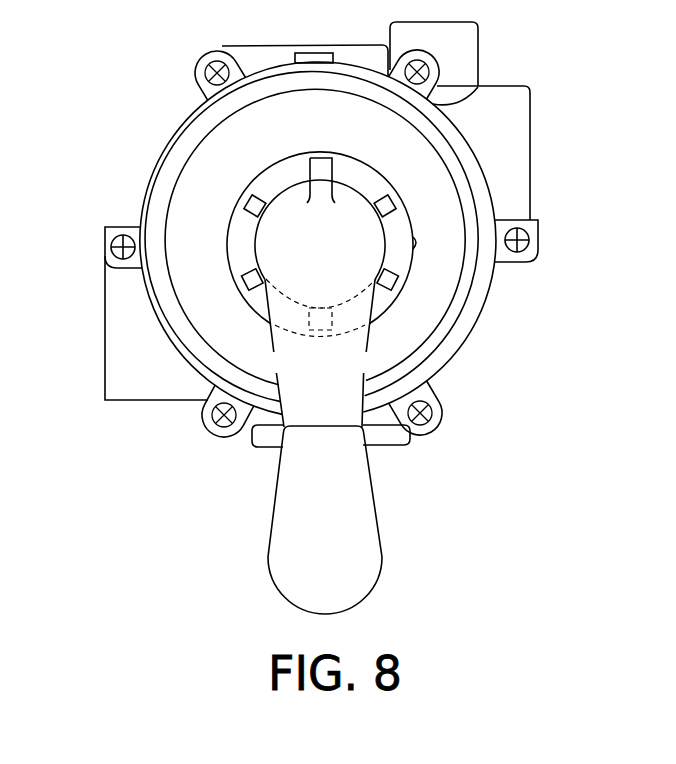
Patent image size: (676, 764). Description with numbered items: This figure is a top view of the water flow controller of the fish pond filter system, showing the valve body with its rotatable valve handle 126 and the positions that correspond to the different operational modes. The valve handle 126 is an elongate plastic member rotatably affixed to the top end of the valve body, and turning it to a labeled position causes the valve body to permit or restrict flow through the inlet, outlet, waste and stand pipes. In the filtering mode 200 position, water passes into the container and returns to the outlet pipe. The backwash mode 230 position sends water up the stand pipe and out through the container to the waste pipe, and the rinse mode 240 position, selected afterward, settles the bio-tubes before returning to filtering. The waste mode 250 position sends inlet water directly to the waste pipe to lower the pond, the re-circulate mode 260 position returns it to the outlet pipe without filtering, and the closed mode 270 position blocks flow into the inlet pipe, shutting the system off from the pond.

The valve handle 126 is at (290, 518).
The filtering mode 200 is at (342, 117).
The backwash mode 230 is at (342, 381).
The rinse mode 240 is at (176, 194).
The waste mode 250 is at (459, 186).
The re-circulate mode 260 is at (205, 323).
The closed mode 270 is at (457, 316).